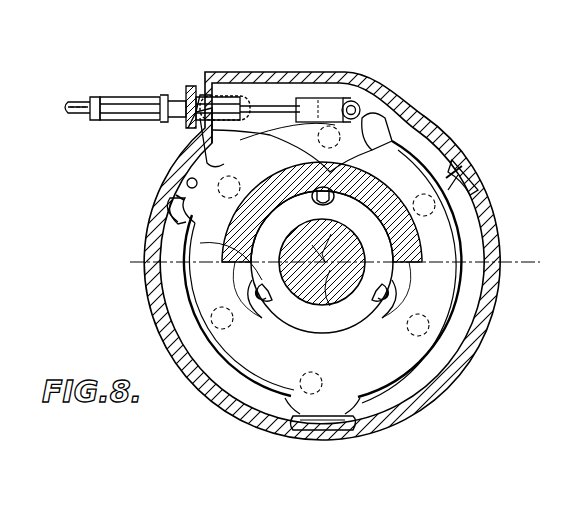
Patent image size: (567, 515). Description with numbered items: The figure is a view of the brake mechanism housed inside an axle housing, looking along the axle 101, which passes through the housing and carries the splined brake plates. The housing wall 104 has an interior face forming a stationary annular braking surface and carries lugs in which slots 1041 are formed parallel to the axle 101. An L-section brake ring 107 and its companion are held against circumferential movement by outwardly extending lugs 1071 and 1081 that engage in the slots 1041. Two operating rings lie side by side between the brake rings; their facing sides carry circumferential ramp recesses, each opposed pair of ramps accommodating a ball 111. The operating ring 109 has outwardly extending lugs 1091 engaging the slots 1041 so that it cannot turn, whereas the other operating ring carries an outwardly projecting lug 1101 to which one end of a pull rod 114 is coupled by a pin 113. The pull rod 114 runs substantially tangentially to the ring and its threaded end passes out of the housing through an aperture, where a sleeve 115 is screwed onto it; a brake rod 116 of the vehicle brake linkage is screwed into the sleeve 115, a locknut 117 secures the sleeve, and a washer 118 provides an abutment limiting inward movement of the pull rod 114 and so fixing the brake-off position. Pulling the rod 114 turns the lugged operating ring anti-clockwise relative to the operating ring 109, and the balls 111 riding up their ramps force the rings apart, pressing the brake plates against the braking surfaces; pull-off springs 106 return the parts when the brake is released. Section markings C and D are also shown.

The axle 101 is at (315, 300).
The wall of the axle housing 104 is at (165, 335).
The slots 1041 is at (455, 168).
The pull-off springs 106 is at (262, 286).
The brake ring 107 is at (260, 368).
The lug 1071 is at (316, 412).
The lug 1081 is at (463, 167).
The operating ring 109 is at (200, 246).
The lugs 1091 is at (178, 220).
The lug 1101 is at (370, 110).
The ball 111 is at (408, 340).
The pin 113 is at (350, 100).
The pull rod 114 is at (270, 106).
The sleeve 115 is at (131, 97).
The brake rod 116 is at (72, 112).
The locknut 117 is at (92, 97).
The washer 118 is at (190, 97).
The section line C is at (352, 80).
The section line D is at (182, 172).